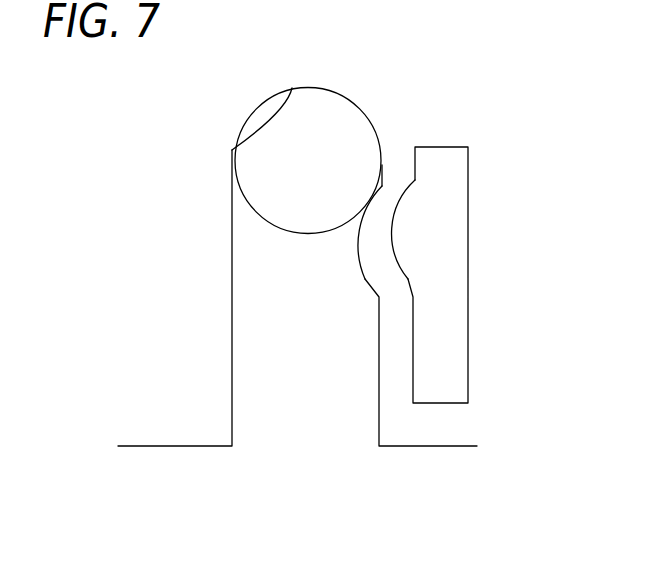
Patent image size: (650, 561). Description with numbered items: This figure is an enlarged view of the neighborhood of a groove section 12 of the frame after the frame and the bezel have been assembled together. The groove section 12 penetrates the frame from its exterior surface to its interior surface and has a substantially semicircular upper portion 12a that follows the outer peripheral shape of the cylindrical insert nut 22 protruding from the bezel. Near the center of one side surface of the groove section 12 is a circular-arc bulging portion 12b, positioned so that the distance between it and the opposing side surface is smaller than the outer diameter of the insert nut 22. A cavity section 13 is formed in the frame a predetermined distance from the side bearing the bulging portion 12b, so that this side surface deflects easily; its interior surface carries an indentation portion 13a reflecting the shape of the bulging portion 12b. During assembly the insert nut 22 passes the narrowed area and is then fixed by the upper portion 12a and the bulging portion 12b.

The groove section 12 is at (295, 392).
The upper portion 12a is at (232, 150).
The bulging portion 12b is at (365, 279).
The cavity section 13 is at (468, 233).
The indentation portion 13a is at (393, 243).
The insert nut 22 is at (333, 120).